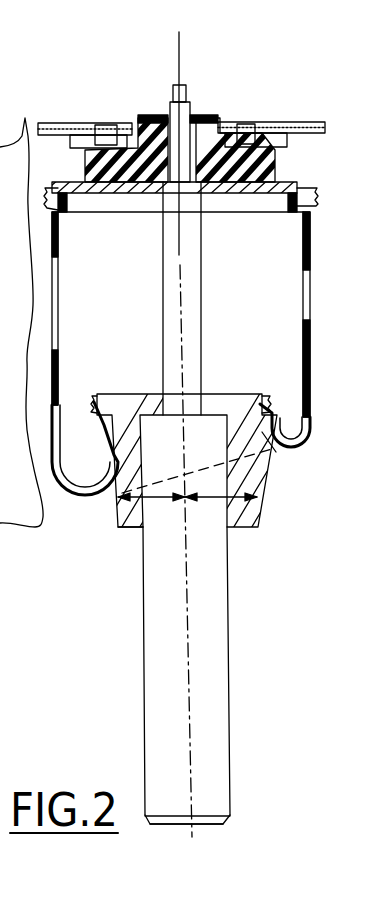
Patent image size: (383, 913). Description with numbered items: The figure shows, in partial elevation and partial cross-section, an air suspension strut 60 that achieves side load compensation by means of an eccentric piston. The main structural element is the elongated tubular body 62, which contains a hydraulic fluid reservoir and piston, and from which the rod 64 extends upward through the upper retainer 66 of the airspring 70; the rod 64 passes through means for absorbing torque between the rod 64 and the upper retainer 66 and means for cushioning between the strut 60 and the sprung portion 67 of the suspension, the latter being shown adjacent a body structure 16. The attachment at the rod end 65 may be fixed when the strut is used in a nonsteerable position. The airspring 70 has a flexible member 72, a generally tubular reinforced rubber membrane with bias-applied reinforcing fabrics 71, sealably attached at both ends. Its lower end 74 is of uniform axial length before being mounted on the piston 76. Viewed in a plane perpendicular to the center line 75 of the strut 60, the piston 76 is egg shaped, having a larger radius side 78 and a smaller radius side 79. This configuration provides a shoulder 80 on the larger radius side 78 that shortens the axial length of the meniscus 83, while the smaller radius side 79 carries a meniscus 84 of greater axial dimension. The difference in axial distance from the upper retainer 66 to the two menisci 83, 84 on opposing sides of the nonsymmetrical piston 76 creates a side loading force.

The vehicle body panel 16 is at (24, 133).
The air suspension strut 60 is at (286, 96).
The elongated tubular body 62 is at (228, 640).
The rod 64 is at (188, 296).
The rod end 65 is at (183, 116).
The upper retainer 66 is at (291, 178).
The sprung portion 67 is at (72, 122).
The airspring 70 is at (213, 314).
The reinforcing fabrics 71 is at (311, 284).
The flexible member 72 is at (311, 362).
The lower end 74 is at (258, 398).
The center line 75 is at (193, 832).
The piston 76 is at (263, 482).
The larger radius side 78 is at (197, 456).
The smaller radius side 79 is at (148, 503).
The shoulder 80 is at (268, 448).
The meniscus 83 is at (305, 420).
The meniscus 84 is at (90, 462).